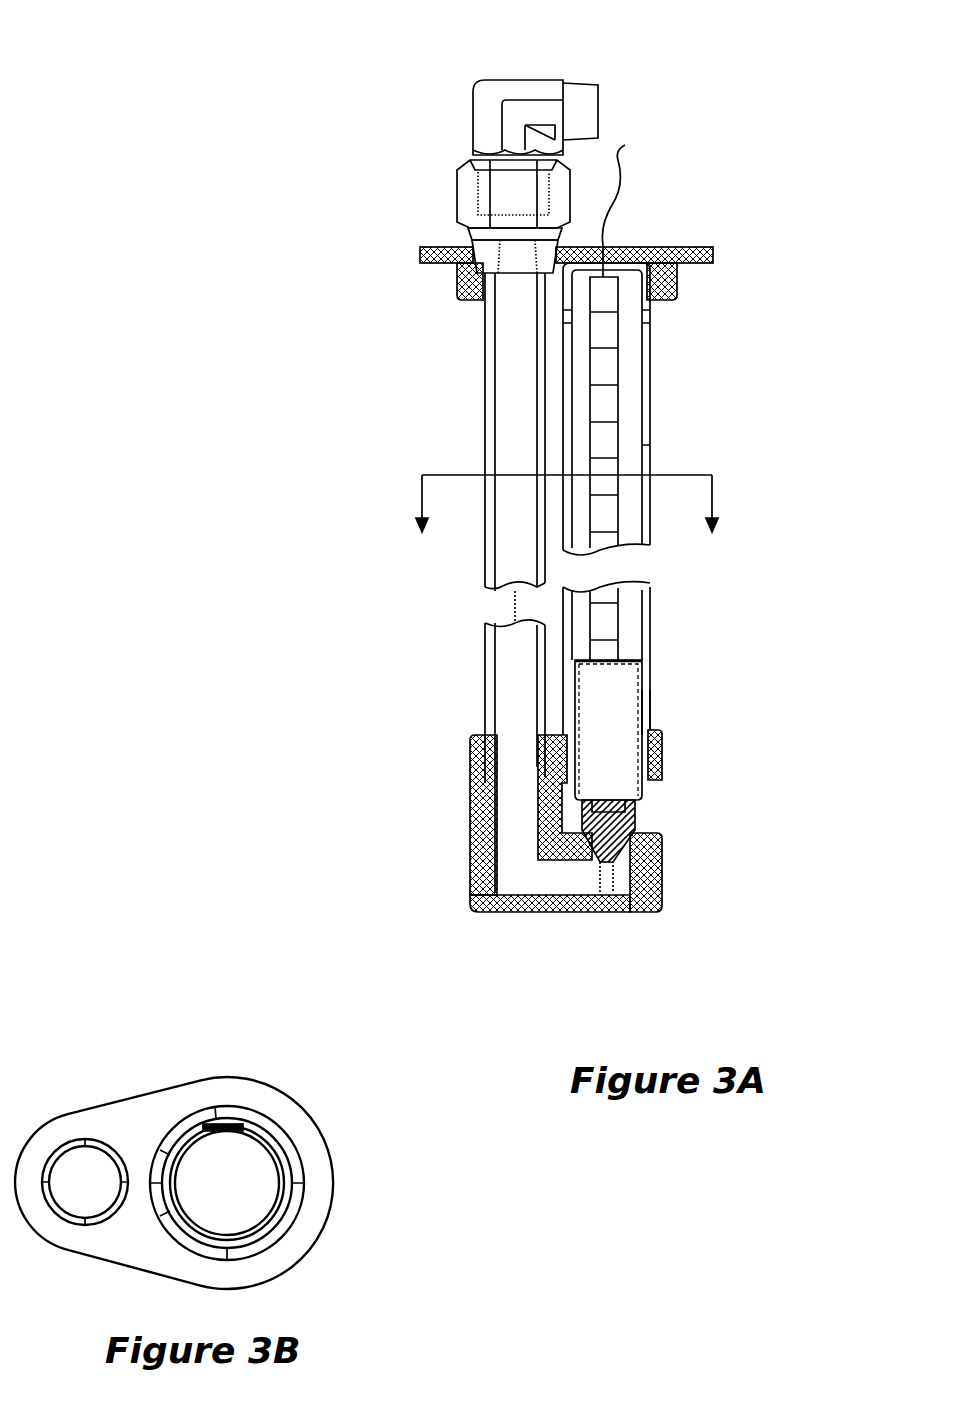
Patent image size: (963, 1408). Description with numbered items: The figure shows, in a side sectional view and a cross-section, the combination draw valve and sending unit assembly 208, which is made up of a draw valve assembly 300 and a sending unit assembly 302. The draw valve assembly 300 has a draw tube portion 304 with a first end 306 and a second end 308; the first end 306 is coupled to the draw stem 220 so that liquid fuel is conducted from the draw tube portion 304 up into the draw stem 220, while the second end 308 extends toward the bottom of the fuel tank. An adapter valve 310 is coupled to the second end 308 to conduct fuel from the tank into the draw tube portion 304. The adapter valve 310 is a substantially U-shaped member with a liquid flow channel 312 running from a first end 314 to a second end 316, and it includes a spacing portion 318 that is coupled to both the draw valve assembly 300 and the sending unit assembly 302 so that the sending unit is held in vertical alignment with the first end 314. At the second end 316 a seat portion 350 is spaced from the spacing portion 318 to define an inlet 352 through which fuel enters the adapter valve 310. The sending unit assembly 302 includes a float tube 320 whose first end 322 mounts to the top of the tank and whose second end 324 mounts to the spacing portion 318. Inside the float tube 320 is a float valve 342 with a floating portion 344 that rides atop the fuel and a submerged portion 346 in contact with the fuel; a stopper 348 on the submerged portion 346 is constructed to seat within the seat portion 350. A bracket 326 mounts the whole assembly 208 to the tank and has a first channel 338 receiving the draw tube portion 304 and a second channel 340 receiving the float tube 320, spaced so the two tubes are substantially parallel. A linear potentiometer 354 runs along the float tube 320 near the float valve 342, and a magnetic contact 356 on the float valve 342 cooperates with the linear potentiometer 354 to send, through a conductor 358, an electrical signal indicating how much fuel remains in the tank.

In FIG. 3A, the draw stem 220 is at (527, 80).
In FIG. 3A, the first channel 338 is at (467, 232).
In FIG. 3A, the bracket 326 is at (675, 247).
In FIG. 3B, the bracket 326 is at (157, 1096).
In FIG. 3A, the first end 306 is at (483, 302).
In FIG. 3A, the second channel 340 is at (680, 291).
In FIG. 3A, the draw tube portion 304 is at (485, 570).
In FIG. 3B, the draw tube portion 304 is at (67, 1140).
In FIG. 3A, the second end 308 is at (485, 658).
In FIG. 3A, the float tube 320 is at (650, 453).
In FIG. 3B, the float tube 320 is at (280, 1138).
In FIG. 3A, the first end 322 is at (650, 330).
In FIG. 3A, the linear potentiometer 354 is at (623, 375).
In FIG. 3A, the conductor 358 is at (633, 138).
In FIG. 3A, the float valve 342 is at (642, 680).
In FIG. 3B, the float valve 342 is at (267, 1223).
In FIG. 3A, the floating portion 344 is at (625, 655).
In FIG. 3A, the second end 324 is at (650, 695).
In FIG. 3A, the spacing portion 318 is at (662, 760).
In FIG. 3A, the submerged portion 346 is at (640, 797).
In FIG. 3A, the seat portion 350 is at (607, 863).
In FIG. 3A, the stopper 348 is at (613, 847).
In FIG. 3A, the second end 316 is at (470, 775).
In FIG. 3A, the adapter valve 310 is at (510, 913).
In FIG. 3A, the first end 314 is at (662, 850).
In FIG. 3A, the liquid flow channel 312 is at (497, 865).
In FIG. 3A, the sending unit assembly 302 is at (760, 521).
In FIG. 3A, the draw valve assembly 300 is at (355, 425).
In FIG. 3A, the combination draw valve and sending unit assembly 208 is at (812, 371).
In FIG. 3A, the inlet 352 is at (688, 813).
In FIG. 3B, the magnetic contact 356 is at (220, 1122).